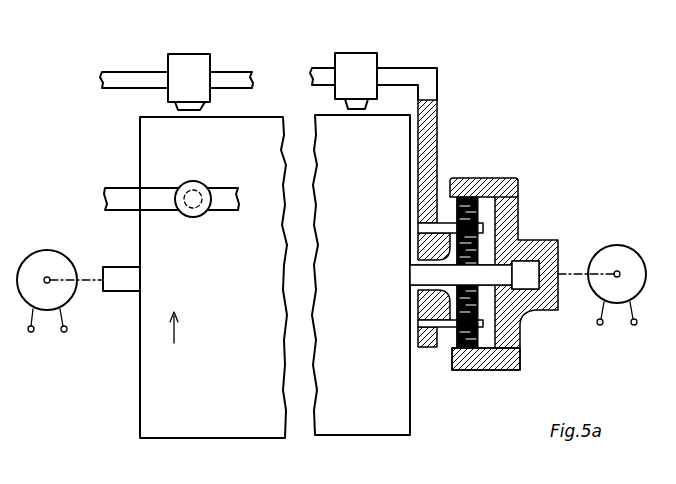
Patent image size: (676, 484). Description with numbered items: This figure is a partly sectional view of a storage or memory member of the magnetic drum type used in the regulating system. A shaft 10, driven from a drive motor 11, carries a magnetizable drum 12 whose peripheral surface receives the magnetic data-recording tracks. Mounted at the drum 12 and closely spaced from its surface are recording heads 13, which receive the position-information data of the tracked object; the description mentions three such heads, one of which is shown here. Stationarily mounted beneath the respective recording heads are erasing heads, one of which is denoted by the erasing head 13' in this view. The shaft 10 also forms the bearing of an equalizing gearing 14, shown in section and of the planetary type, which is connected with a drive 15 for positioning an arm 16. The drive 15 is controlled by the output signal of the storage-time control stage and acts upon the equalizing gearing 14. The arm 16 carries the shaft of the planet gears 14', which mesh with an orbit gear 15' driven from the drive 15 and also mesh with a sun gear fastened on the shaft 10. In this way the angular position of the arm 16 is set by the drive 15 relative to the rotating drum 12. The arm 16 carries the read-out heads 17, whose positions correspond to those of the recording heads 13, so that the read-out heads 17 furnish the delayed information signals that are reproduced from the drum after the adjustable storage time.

The shaft 10 is at (116, 268).
The drive motor 11 is at (47, 252).
The magnetizable drum 12 is at (214, 438).
The recording heads 13 is at (176, 66).
The erasing head 13' is at (171, 183).
The equalizing gearing 14 is at (450, 253).
The planet gears 14' is at (509, 273).
The drive 15 is at (602, 267).
The orbit gear 15' is at (487, 376).
The arm 16 is at (412, 72).
The read-out heads 17 is at (353, 56).